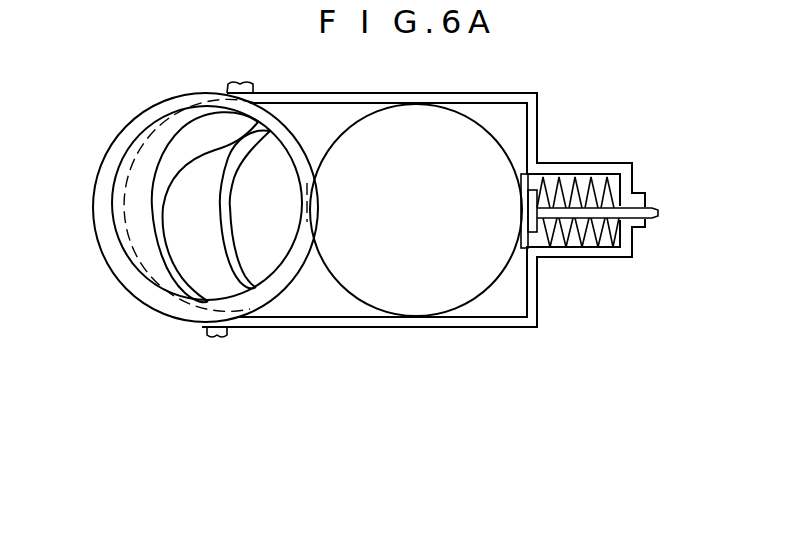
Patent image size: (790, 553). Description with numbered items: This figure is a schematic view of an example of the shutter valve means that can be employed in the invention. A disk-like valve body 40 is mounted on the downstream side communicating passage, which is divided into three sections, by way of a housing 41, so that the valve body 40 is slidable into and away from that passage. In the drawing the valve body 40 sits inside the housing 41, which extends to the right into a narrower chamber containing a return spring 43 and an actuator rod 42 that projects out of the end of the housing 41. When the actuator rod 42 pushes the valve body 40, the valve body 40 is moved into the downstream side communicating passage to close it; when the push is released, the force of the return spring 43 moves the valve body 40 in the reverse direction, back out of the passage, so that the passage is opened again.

The valve body 40 is at (430, 297).
The housing 41 is at (538, 133).
The actuator rod 42 is at (651, 217).
The return spring 43 is at (582, 238).